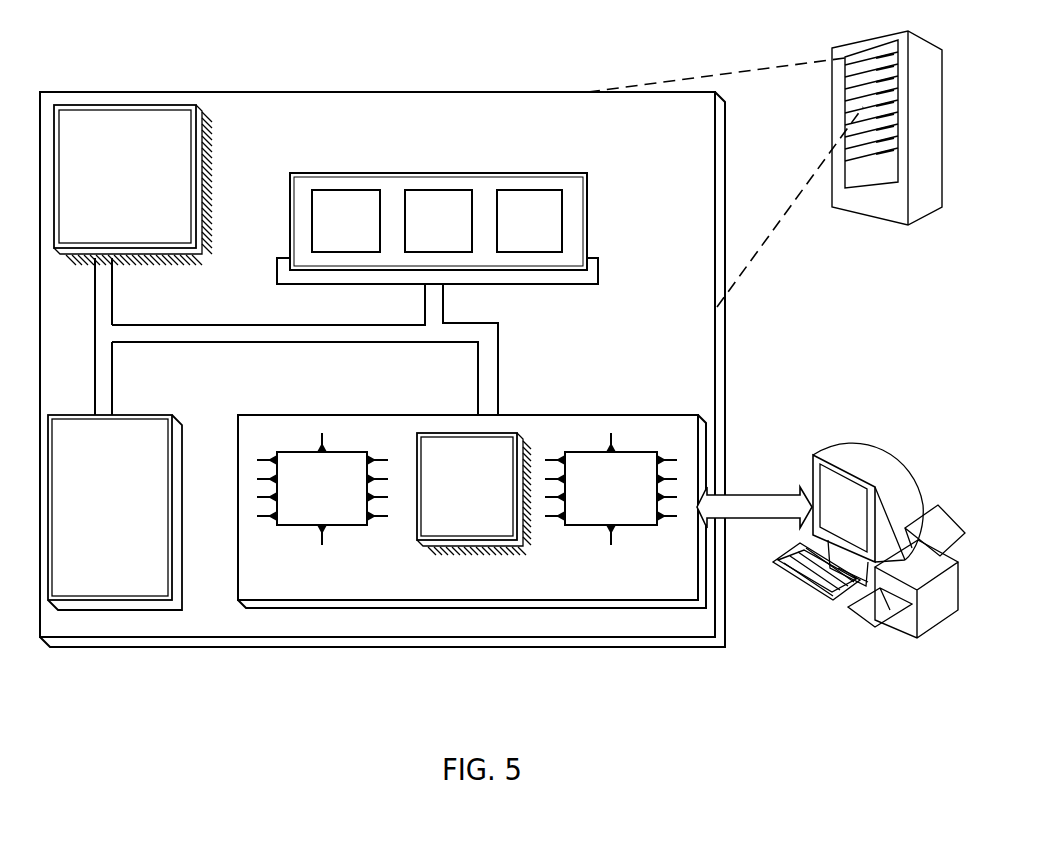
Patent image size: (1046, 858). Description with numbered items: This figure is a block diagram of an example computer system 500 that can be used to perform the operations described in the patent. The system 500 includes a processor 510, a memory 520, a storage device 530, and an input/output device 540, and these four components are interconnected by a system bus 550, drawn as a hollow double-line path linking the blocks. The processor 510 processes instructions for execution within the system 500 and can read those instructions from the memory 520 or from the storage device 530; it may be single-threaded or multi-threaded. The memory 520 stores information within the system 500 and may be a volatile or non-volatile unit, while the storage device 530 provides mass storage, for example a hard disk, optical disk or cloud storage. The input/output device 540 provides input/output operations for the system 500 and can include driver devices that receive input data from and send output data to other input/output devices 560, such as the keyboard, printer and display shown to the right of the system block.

The computer system 500 is at (177, 74).
The processor 510 is at (188, 237).
The memory 520 is at (587, 222).
The storage device 530 is at (152, 591).
The input/output device 540 is at (652, 414).
The system bus 550 is at (298, 342).
The input/output devices 560 is at (813, 453).